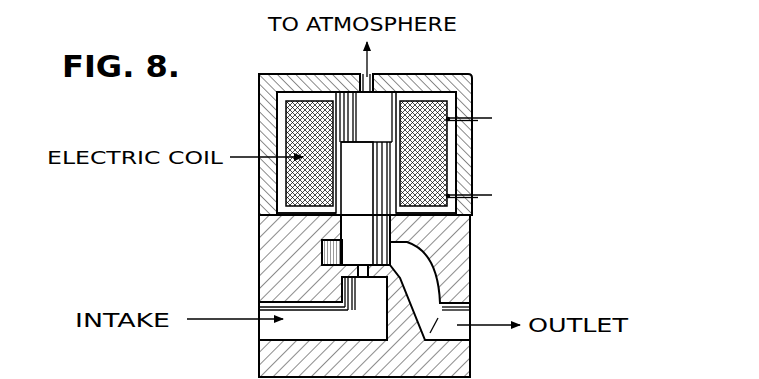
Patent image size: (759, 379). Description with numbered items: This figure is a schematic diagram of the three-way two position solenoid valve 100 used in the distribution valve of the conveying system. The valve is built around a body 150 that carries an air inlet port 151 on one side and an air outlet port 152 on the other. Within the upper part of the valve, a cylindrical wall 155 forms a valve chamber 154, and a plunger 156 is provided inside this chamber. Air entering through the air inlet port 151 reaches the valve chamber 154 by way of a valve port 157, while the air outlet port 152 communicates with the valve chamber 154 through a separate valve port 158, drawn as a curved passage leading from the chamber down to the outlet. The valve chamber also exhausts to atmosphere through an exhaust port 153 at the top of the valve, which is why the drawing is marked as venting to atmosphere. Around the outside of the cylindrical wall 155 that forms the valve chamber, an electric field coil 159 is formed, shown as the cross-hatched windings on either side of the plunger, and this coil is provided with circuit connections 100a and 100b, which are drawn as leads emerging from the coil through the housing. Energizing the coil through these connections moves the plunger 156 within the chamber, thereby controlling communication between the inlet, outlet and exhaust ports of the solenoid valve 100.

The three-way two position solenoid valve 100 is at (462, 77).
The circuit connection 100a is at (492, 118).
The circuit connection 100b is at (492, 195).
The body 150 is at (460, 235).
The air inlet port 151 is at (260, 331).
The air outlet port 152 is at (462, 337).
The exhaust port 153 is at (369, 75).
The valve chamber 154 is at (356, 98).
The cylindrical wall 155 is at (453, 95).
The plunger 156 is at (458, 213).
The valve port 157 is at (364, 282).
The valve port 158 is at (410, 260).
The electric field coil 159 is at (441, 137).